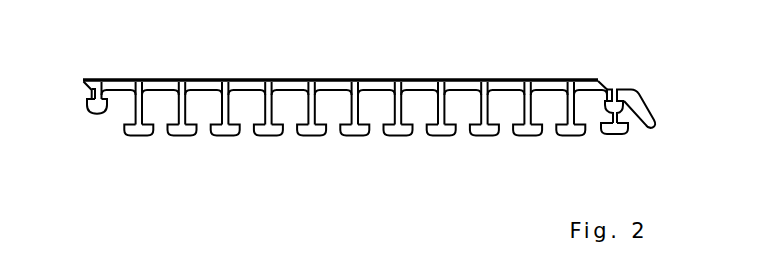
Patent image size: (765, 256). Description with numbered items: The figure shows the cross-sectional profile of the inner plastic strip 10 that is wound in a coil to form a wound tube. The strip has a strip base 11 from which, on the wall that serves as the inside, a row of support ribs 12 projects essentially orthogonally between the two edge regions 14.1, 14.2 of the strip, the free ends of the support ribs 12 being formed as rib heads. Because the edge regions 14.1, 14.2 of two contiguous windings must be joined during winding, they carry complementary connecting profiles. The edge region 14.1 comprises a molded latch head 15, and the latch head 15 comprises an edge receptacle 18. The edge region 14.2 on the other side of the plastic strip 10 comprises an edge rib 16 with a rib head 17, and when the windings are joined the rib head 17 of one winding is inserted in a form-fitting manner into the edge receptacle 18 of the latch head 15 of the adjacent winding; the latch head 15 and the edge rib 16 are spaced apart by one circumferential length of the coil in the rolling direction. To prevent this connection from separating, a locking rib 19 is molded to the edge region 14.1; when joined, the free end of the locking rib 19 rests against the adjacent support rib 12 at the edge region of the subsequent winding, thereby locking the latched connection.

The inner plastic strip 10 is at (368, 107).
The strip base 11 is at (248, 79).
The support ribs 12 is at (137, 107).
The edge region of the inner plastic strip 14.1 is at (621, 134).
The edge region of the inner plastic strip 14.2 is at (100, 79).
The latch head 15 is at (138, 136).
The edge rib 16 is at (91, 96).
The rib head 17 is at (100, 108).
The edge receptacle 18 is at (614, 101).
The locking rib 19 is at (645, 100).